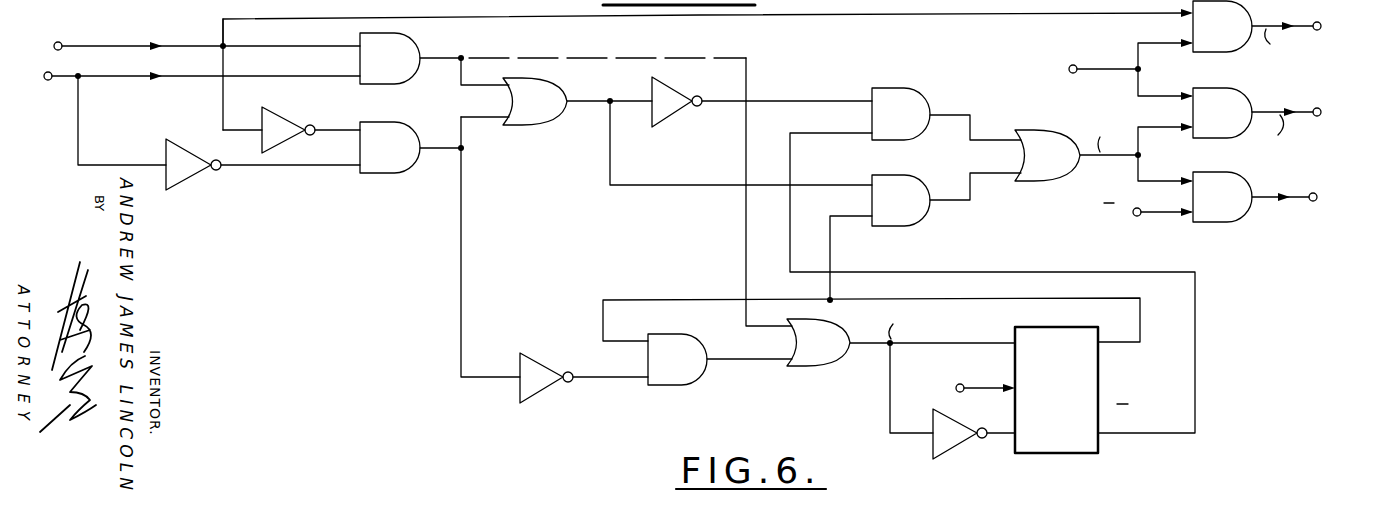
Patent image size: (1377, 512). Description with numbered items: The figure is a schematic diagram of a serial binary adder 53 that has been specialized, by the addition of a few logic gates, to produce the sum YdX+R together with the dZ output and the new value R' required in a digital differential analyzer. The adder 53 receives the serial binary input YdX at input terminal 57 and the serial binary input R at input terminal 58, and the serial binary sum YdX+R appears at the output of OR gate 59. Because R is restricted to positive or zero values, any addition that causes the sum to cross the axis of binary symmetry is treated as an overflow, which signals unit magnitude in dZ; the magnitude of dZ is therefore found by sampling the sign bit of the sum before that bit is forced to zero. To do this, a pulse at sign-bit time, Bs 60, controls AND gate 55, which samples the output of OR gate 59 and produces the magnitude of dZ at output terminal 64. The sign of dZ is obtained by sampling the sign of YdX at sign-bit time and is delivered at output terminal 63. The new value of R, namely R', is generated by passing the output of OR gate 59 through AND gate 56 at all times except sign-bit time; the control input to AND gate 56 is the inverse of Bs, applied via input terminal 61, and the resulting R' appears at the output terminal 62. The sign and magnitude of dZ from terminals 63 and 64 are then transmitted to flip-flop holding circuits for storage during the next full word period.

The serial binary adder 53 is at (350, 213).
The AND gate 55 is at (1232, 87).
The AND gate 56 is at (1230, 223).
The input terminal 57 is at (60, 41).
The input terminal 58 is at (48, 81).
The OR gate 59 is at (1033, 182).
The sign-bit time pulse Bs 60 is at (1075, 64).
The input terminal 61 is at (1137, 217).
The R' output terminal 62 is at (1313, 202).
The output terminal 63 is at (1317, 21).
The output terminal 64 is at (1317, 107).